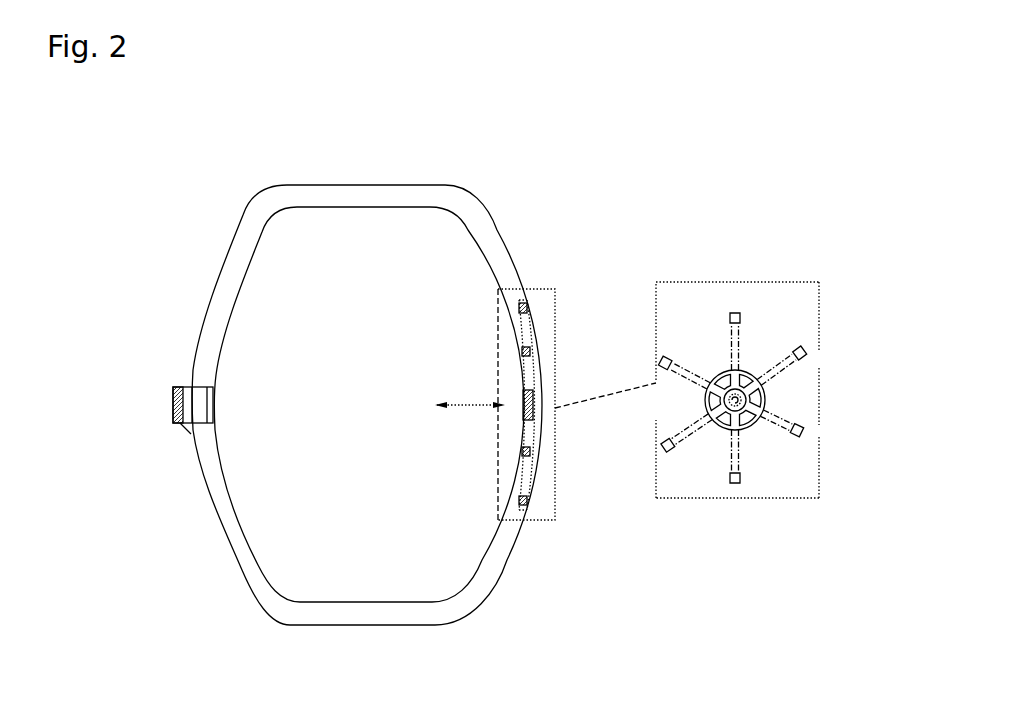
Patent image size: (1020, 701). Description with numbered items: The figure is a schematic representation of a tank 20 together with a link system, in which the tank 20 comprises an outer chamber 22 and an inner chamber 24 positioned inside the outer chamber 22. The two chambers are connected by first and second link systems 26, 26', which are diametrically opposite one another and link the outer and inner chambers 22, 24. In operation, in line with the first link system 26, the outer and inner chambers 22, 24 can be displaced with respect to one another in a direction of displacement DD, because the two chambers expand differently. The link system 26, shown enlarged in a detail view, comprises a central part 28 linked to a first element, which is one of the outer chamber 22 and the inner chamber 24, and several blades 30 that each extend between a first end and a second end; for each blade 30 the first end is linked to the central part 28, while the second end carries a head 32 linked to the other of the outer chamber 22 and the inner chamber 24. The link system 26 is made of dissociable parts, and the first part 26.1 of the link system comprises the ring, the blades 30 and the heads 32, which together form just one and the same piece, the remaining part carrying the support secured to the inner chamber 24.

The tank 20 is at (190, 215).
The outer chamber 22 is at (283, 187).
The inner chamber 24 is at (221, 326).
The first link system 26 is at (667, 377).
The second link system 26' is at (148, 397).
The first part of the link system 26.1 is at (764, 338).
The central part 28 is at (748, 425).
The blades 30 is at (718, 322).
The head 32 is at (733, 305).